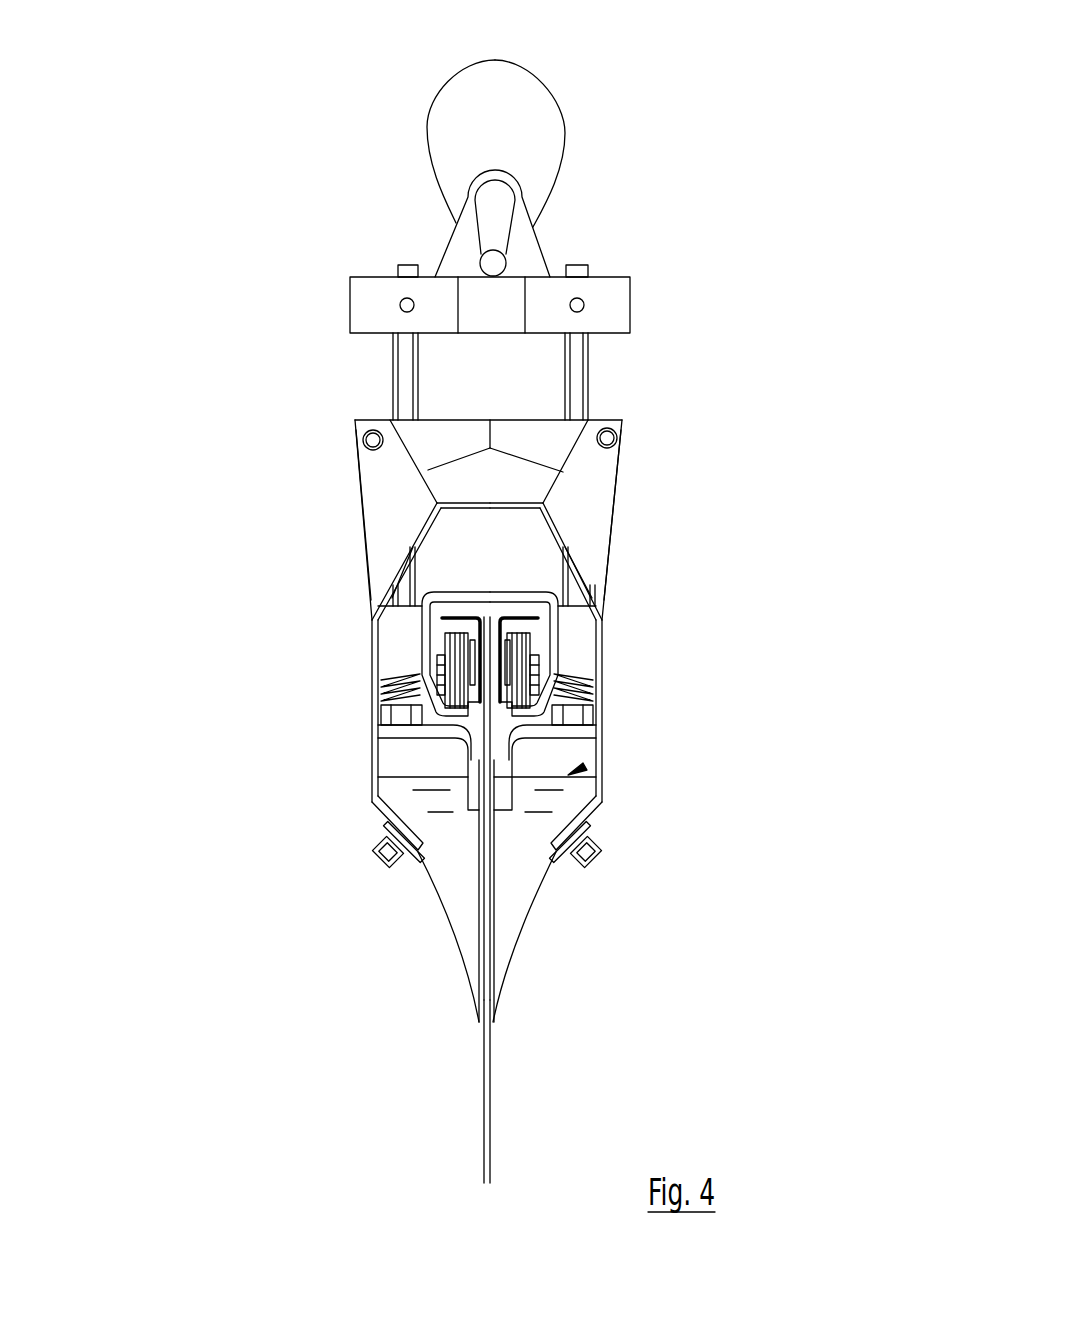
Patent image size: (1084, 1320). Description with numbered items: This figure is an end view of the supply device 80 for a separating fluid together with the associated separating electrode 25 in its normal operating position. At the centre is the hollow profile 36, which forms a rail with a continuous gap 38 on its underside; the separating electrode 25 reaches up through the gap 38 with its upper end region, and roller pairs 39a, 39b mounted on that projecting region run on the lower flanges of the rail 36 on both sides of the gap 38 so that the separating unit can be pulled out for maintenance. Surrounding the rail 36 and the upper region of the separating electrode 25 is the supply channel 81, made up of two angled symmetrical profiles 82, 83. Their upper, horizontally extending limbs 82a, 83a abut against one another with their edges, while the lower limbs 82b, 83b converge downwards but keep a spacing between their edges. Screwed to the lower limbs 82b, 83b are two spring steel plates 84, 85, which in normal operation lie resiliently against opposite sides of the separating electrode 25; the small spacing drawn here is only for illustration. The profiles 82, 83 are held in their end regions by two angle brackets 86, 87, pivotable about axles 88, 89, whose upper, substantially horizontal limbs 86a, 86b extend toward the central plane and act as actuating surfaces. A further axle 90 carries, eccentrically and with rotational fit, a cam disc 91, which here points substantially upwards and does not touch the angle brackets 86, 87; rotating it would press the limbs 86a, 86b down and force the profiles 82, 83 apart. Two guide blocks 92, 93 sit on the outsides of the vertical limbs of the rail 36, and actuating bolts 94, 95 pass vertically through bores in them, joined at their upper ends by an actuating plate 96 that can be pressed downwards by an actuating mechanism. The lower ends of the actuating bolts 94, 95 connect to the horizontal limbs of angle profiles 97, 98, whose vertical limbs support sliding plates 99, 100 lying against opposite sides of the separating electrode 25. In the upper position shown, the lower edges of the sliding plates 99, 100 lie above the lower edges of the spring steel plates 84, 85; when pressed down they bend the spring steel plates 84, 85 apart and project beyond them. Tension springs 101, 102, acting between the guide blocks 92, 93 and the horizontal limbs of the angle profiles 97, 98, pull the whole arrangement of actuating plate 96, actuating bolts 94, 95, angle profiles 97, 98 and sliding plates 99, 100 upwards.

The supply device 80 is at (340, 138).
The cam disc 91 is at (522, 95).
The axle 90 is at (493, 263).
The actuating plate 96 is at (597, 287).
The axle 88 is at (370, 437).
The axle 89 is at (602, 468).
The upper limb of angle bracket 86a is at (432, 437).
The upper limb of angle bracket 86b is at (547, 438).
The angle bracket 86 is at (370, 467).
The angle bracket 87 is at (604, 472).
The upper limb of profile 82a is at (460, 502).
The upper limb of profile 83a is at (527, 502).
The actuating bolt 94 is at (402, 587).
The actuating bolt 95 is at (573, 577).
The angled profile 82 is at (372, 615).
The angled profile 83 is at (605, 610).
The guide block 92 is at (423, 660).
The guide block 93 is at (573, 643).
The hollow profile 36 is at (548, 635).
The roller 39a is at (448, 675).
The roller 39b is at (515, 675).
The tension spring 101 is at (383, 697).
The tension spring 102 is at (607, 690).
The angle profile 97 is at (453, 737).
The gap 38 is at (490, 740).
The supply channel 81 is at (588, 762).
The angle profile 98 is at (497, 785).
The lower limb of profile 82b is at (393, 817).
The lower limb of profile 83b is at (587, 803).
The sliding plate 99 is at (483, 865).
The sliding plate 100 is at (493, 887).
The spring steel plate 84 is at (440, 898).
The spring steel plate 85 is at (523, 908).
The separating electrode 25 is at (487, 1090).